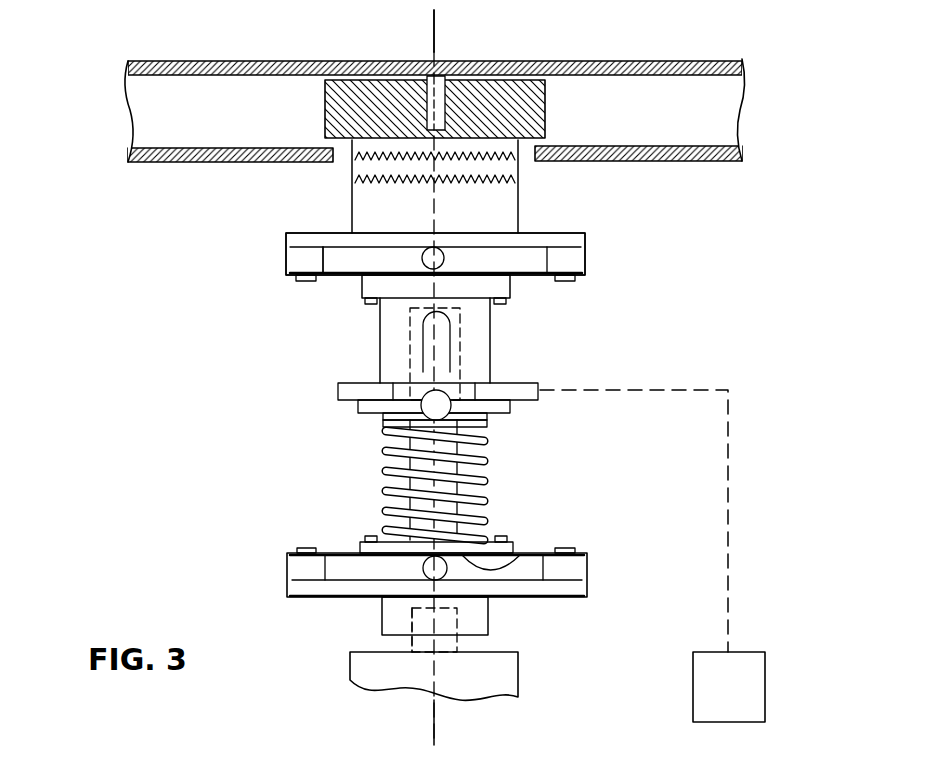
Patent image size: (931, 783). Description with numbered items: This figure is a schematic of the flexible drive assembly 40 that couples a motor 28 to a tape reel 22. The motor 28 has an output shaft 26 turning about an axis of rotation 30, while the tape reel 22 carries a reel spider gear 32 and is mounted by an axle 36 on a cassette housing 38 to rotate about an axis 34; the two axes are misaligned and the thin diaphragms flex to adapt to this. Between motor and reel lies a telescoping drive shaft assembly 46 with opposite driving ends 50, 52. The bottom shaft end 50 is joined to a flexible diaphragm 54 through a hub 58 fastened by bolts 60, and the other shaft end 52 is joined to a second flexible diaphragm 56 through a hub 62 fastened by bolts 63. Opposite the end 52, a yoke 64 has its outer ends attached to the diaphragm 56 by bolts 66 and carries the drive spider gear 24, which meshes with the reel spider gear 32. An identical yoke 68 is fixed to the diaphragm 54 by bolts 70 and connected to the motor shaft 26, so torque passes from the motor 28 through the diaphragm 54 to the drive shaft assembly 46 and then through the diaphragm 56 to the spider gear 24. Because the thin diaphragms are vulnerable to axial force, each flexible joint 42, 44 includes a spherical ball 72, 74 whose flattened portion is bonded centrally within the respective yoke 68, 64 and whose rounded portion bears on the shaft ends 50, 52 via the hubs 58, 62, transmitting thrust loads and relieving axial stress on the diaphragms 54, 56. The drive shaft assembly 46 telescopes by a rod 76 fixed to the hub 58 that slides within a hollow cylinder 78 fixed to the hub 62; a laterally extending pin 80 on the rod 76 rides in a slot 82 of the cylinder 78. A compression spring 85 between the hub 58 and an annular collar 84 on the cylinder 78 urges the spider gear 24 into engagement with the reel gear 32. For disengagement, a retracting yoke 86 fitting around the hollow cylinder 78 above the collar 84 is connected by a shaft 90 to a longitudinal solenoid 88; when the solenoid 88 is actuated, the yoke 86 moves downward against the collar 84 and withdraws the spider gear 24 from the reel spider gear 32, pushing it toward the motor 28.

The tape reel 22 is at (325, 112).
The spider gear 24 is at (520, 195).
The output shaft 26 is at (412, 655).
The motor 28 is at (520, 672).
The axis of rotation 30 is at (436, 725).
The reel spider gear 32 is at (350, 156).
The axis 34 is at (436, 36).
The axle 36 is at (430, 76).
The cassette housing 38 is at (160, 163).
The flexible drive assembly 40 is at (122, 376).
The flexible joint 42 is at (248, 542).
The flexible joint 44 is at (246, 284).
The drive shaft assembly 46 is at (246, 406).
The driving end 50 is at (520, 553).
The driving end 52 is at (478, 268).
The flexible diaphragm 54 is at (545, 553).
The flexible diaphragm 56 is at (528, 282).
The hub 58 is at (358, 548).
The bolts 60 is at (366, 538).
The hub 62 is at (512, 292).
The bolts 63 is at (366, 305).
The yoke 64 is at (286, 258).
The bolts 66 is at (303, 282).
The yoke 68 is at (548, 598).
The bolts 70 is at (578, 548).
The spherical ball 72 is at (426, 574).
The spherical ball 74 is at (433, 247).
The rod 76 is at (484, 474).
The hollow cylinder 78 is at (490, 328).
The laterally extending pin 80 is at (441, 394).
The slot 82 is at (425, 356).
The collar 84 is at (358, 408).
The compression spring 85 is at (392, 480).
The yoke 86 is at (340, 390).
The longitudinal solenoid 88 is at (766, 674).
The shaft 90 is at (728, 448).